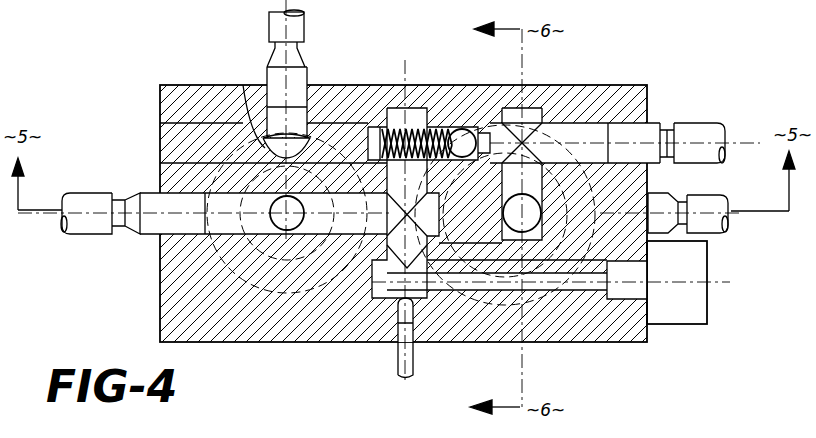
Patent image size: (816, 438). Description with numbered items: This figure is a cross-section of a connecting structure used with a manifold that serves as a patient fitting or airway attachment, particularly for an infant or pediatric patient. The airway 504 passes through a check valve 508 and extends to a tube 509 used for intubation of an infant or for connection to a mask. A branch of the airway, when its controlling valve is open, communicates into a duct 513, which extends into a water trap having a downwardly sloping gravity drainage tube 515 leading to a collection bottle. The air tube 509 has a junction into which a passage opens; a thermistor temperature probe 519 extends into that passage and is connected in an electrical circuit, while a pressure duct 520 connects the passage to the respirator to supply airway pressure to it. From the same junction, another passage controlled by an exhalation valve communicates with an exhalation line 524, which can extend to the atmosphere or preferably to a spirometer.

The duct 513 is at (174, 84).
The exhalation line 524 is at (268, 67).
The check valve 508 is at (462, 128).
The airway 504 is at (700, 124).
The gravity drainage tube 515 is at (716, 205).
The thermistor temperature probe 519 is at (700, 263).
The tube 509 is at (100, 195).
The pressure duct 520 is at (398, 362).